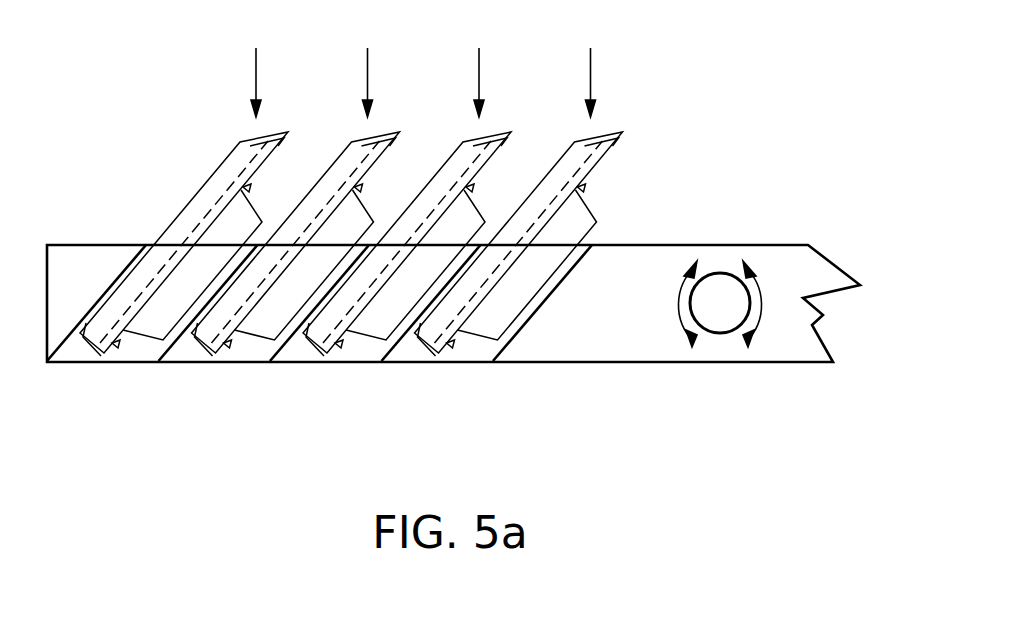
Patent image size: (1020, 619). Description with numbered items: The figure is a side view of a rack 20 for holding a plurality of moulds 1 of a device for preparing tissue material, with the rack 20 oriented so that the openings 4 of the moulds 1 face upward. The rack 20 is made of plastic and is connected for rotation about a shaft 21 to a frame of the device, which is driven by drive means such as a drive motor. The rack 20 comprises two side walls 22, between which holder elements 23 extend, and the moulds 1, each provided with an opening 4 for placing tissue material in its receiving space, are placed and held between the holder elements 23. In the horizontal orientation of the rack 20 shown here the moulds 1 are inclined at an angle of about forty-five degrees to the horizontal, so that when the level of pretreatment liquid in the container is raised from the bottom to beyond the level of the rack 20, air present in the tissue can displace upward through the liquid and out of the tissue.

The mould 1 is at (423, 69).
The opening 4 is at (218, 198).
The rack 20 is at (805, 137).
The shaft 21 is at (720, 295).
The side wall 22 is at (614, 322).
The holder element 23 is at (62, 348).